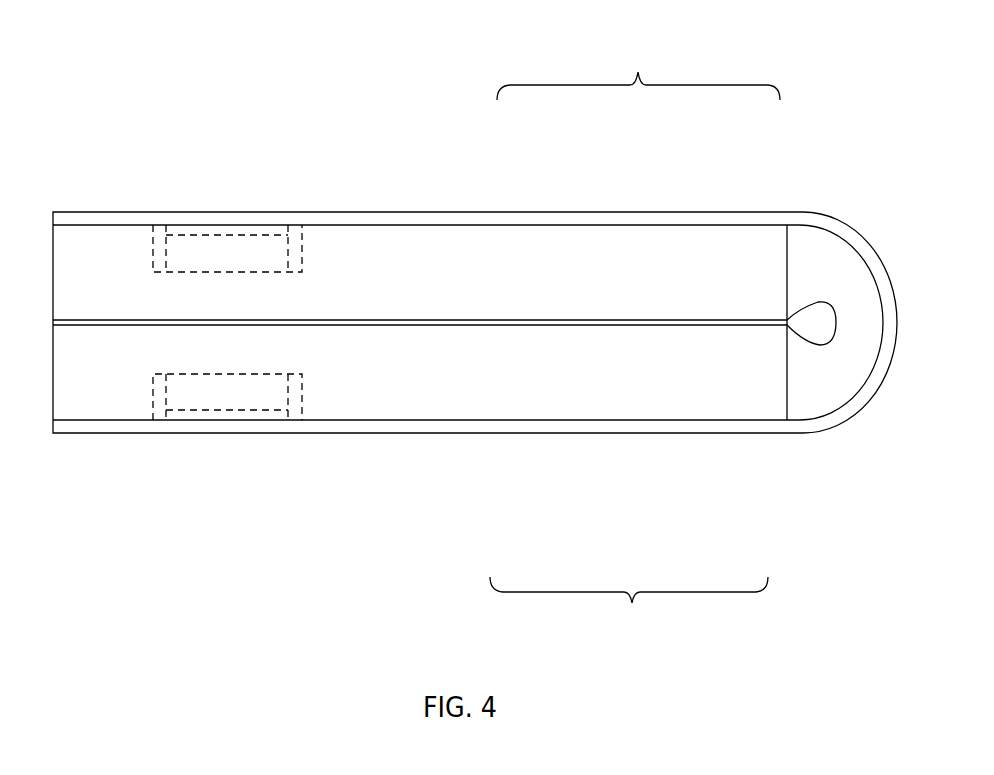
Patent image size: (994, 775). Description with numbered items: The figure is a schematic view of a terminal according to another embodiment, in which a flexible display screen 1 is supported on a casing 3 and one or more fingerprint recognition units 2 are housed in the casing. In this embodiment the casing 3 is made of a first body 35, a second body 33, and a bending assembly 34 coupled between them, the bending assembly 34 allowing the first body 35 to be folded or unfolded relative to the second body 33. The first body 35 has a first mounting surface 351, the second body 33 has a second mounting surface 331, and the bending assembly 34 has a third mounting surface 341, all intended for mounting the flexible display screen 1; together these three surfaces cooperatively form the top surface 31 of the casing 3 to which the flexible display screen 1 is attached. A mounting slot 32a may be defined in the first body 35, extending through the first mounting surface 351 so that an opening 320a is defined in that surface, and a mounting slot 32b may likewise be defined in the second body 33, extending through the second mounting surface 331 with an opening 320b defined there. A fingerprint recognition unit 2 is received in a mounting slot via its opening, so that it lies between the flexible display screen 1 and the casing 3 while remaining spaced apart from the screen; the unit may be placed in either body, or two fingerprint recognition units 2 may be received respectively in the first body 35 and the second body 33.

The flexible display screen 1 is at (867, 387).
The fingerprint recognition unit 2 is at (228, 245).
The casing 3 is at (426, 548).
The top surface 31 is at (638, 53).
The mounting slot 32a is at (158, 238).
The mounting slot 32b is at (294, 400).
The opening 320a is at (174, 225).
The opening 320b is at (243, 420).
The second body 33 is at (547, 375).
The second mounting surface 331 is at (601, 420).
The bending assembly 34 is at (810, 387).
The third mounting surface 341 is at (875, 280).
The first body 35 is at (405, 290).
The first mounting surface 351 is at (455, 226).